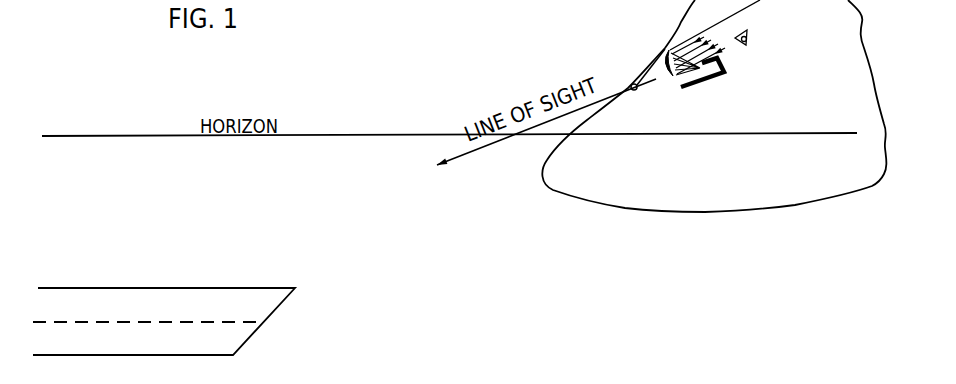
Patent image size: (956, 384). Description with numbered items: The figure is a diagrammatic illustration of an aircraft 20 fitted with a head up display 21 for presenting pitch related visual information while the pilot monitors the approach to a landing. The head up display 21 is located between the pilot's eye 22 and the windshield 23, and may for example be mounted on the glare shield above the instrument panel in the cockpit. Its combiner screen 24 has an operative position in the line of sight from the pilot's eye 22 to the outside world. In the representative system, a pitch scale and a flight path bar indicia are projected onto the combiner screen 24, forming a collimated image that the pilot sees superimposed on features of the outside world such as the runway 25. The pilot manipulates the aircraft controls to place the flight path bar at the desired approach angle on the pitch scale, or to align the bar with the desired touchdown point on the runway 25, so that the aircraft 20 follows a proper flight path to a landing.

The aircraft 20 is at (750, 190).
The head up display 21 is at (668, 82).
The pilot's eye 22 is at (749, 34).
The windshield 23 is at (645, 58).
The combiner screen 24 is at (670, 51).
The runway 25 is at (85, 298).